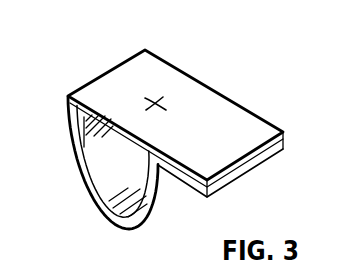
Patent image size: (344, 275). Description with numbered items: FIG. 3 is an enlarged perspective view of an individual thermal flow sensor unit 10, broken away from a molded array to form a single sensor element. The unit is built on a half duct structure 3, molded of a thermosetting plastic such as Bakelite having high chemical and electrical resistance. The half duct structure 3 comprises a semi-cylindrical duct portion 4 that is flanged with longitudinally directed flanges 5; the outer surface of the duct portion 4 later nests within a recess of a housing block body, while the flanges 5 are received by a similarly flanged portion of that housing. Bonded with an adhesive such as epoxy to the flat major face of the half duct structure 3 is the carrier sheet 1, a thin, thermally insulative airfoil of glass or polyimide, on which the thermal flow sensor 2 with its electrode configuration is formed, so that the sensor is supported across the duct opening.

The thermal flow sensor unit 10 is at (110, 49).
The carrier sheet 1 is at (146, 62).
The thermal flow sensor 2 is at (160, 92).
The half duct structure 3 is at (160, 212).
The semi-cylindrical duct portion 4 is at (74, 152).
The longitudinally directed flange 5 is at (209, 198).